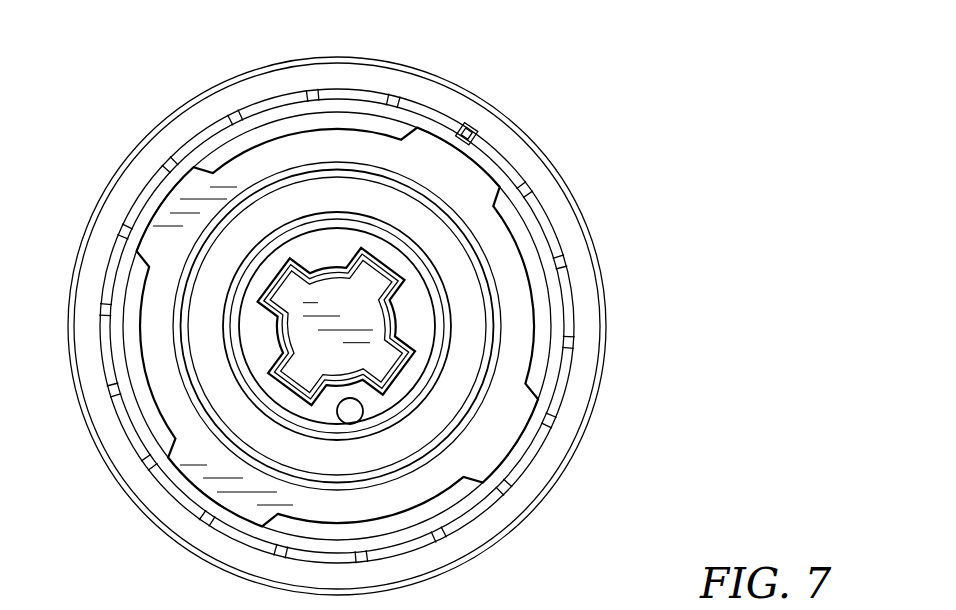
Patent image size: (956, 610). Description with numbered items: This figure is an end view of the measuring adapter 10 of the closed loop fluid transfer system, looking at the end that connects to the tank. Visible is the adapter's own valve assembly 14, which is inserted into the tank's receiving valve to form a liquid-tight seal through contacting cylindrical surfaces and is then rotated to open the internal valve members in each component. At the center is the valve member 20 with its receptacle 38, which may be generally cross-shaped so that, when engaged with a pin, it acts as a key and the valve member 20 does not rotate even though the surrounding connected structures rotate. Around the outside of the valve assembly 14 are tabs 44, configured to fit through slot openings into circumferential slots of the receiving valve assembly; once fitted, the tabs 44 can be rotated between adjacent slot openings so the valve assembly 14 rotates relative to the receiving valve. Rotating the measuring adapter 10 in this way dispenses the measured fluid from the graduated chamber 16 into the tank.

The measuring adapter 10 is at (538, 110).
The valve assembly 14 is at (396, 60).
The graduated chamber 16 is at (183, 108).
The valve member 20 is at (437, 240).
The receptacle 38 is at (406, 338).
The tabs 44 is at (170, 220).